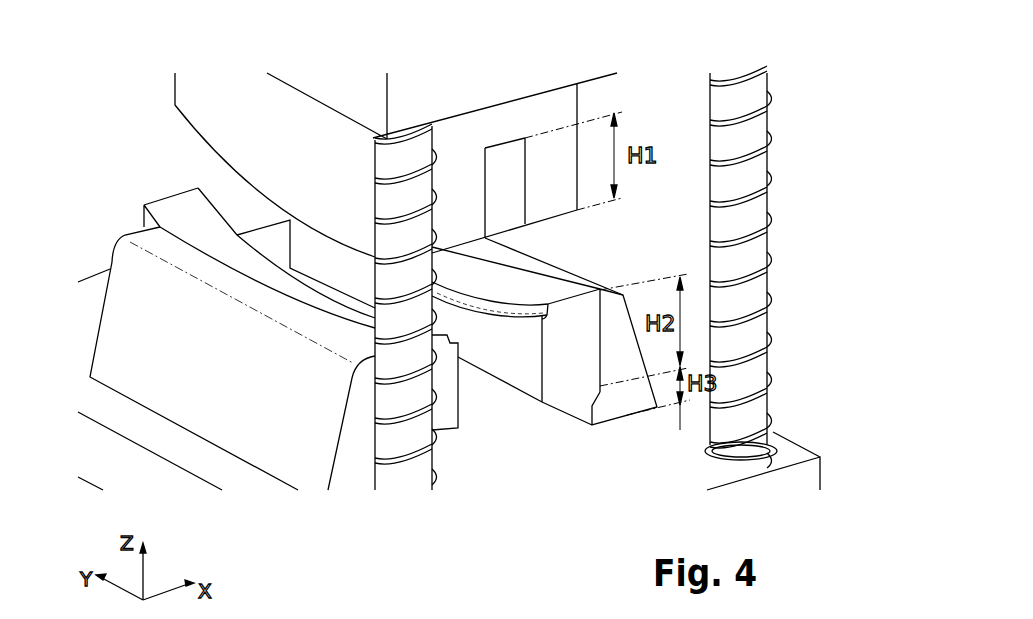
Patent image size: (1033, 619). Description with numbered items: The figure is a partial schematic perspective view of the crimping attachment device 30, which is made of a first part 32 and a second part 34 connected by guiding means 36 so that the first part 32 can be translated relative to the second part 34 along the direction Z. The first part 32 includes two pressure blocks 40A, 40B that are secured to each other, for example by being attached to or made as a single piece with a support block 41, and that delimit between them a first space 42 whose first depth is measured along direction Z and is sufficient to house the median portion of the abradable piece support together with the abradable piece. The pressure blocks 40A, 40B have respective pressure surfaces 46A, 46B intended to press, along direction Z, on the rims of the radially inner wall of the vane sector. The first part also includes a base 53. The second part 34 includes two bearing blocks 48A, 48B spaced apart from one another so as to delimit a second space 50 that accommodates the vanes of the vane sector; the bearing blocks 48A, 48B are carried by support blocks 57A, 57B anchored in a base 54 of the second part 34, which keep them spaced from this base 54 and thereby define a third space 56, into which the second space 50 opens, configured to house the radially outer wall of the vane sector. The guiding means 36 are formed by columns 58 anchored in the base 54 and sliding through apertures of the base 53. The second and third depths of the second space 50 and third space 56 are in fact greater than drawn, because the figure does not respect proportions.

The crimping attachment device 30 is at (803, 128).
The first part 32 is at (177, 92).
The second part 34 is at (826, 469).
The guiding means 36 is at (793, 267).
The pressure block 40A is at (458, 178).
The pressure block 40B is at (545, 163).
The support block 41 is at (567, 105).
The first space 42 is at (503, 170).
The pressure surface 46A is at (447, 258).
The pressure surface 46B is at (557, 213).
The bearing block 48A is at (450, 425).
The bearing block 48B is at (592, 407).
The second space 50 is at (483, 400).
The base 53 is at (362, 97).
The base 54 is at (115, 463).
The third space 56 is at (568, 373).
The support block 57A is at (267, 440).
The support block 57B is at (627, 402).
The column 58 is at (750, 210).